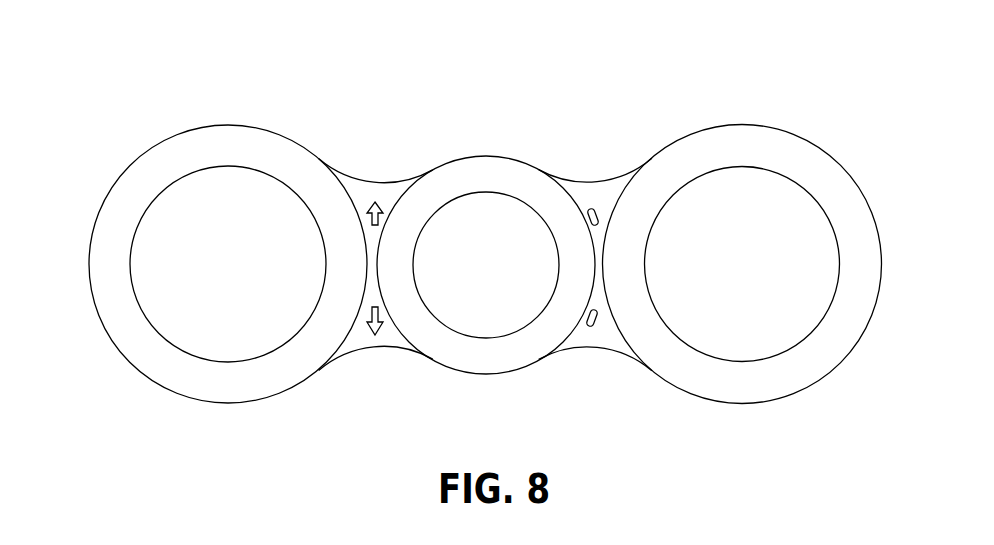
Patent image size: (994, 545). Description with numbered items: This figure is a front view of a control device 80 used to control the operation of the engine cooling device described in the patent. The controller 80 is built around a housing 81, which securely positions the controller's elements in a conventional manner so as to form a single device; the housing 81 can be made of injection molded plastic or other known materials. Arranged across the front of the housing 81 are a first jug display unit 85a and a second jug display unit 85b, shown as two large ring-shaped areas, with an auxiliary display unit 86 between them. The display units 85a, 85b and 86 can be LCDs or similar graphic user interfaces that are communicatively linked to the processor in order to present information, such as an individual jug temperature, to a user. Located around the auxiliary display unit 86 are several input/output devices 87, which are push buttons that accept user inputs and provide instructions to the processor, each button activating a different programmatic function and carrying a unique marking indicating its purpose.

The control device 80 is at (487, 76).
The housing 81 is at (297, 143).
The first jug display unit 85a is at (210, 274).
The second jug display unit 85b is at (765, 274).
The auxiliary display unit 86 is at (474, 274).
The input/output devices 87 is at (378, 200).